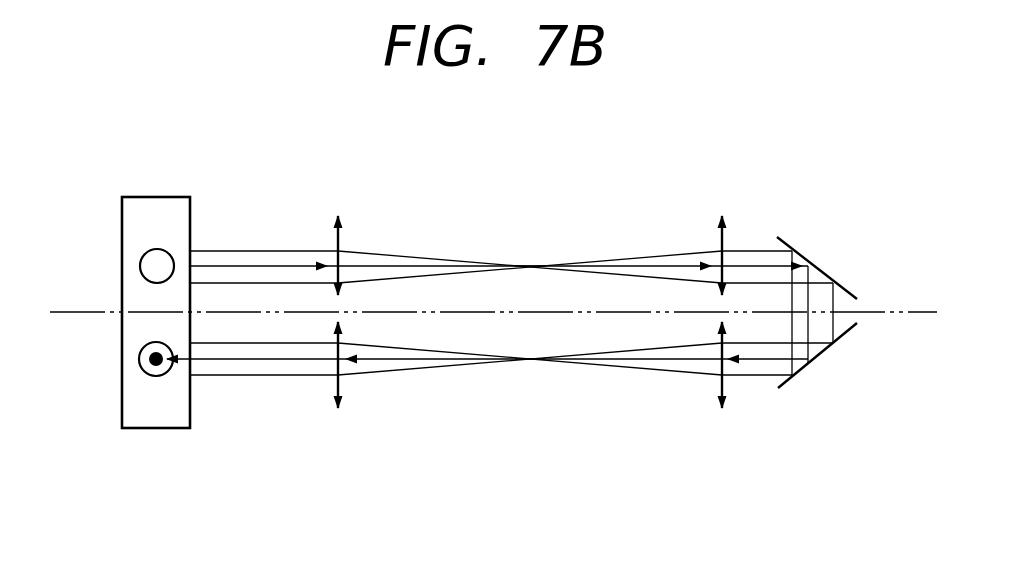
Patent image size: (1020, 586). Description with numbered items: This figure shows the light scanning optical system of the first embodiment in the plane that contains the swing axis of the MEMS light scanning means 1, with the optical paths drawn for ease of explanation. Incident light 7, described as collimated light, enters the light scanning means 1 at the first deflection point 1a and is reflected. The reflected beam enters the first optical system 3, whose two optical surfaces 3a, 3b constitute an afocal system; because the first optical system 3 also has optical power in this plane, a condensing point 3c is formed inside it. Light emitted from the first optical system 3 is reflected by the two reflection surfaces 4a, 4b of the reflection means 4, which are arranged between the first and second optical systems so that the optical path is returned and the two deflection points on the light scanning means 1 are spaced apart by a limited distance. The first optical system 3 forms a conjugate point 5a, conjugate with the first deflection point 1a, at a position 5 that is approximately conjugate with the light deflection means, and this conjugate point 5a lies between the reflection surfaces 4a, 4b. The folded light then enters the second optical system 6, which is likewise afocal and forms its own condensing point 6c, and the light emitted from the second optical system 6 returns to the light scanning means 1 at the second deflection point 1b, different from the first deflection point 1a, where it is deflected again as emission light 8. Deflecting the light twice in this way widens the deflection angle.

The MEMS light scanning means 1 is at (150, 207).
The first deflection point 1a is at (161, 250).
The second deflection point 1b is at (157, 368).
The incident light 7 is at (139, 264).
The emission light 8 is at (140, 366).
The first optical system 3 is at (319, 178).
The optical surface of first optical system 3a is at (340, 242).
The optical surface of first optical system 3b is at (721, 238).
The condensing point 3c is at (530, 264).
The second optical system 6 is at (736, 433).
The condensing point 6c is at (522, 362).
The reflection means 4 is at (809, 266).
The first reflection surface 4a is at (789, 246).
The second reflection surface 4b is at (785, 386).
The position approximately conjugate with the light deflection means 5 is at (834, 283).
The conjugate point 5a is at (810, 323).